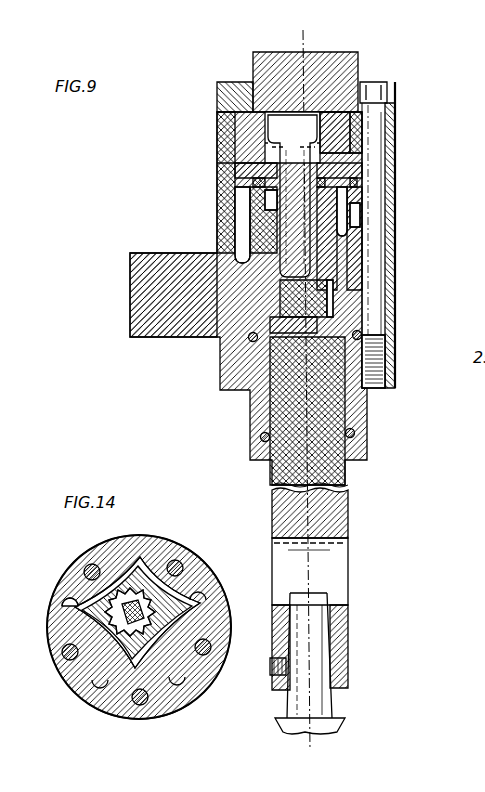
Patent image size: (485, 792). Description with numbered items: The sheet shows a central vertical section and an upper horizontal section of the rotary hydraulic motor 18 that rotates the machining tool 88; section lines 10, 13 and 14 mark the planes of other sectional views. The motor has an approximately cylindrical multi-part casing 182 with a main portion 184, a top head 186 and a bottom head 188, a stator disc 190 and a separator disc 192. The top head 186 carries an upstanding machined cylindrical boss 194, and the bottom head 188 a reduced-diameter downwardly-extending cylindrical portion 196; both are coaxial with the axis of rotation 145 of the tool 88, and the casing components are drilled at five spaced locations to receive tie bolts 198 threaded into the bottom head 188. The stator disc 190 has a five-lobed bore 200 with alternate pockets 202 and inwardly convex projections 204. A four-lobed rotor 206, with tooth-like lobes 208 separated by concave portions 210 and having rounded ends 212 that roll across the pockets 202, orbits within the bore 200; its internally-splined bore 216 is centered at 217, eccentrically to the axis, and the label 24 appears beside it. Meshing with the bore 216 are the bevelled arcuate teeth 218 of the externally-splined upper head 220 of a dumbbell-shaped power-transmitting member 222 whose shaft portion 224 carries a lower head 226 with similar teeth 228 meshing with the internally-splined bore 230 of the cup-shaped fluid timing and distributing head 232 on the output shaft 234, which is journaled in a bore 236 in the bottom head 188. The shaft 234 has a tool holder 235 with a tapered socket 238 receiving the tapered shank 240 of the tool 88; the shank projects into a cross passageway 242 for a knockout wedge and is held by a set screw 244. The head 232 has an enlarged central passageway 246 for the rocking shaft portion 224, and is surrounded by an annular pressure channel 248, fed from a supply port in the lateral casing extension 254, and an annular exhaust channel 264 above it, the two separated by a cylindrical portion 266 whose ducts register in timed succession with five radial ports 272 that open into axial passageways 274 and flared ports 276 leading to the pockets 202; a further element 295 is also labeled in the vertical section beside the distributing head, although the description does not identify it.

In FIG. 9, the section line 10— 10 is at (168, 295).
In FIG. 9, the section line 13— 13 is at (217, 230).
In FIG. 9, the section line 14— 14 is at (230, 125).
In FIG. 9, the rotary hydraulic motor 18 is at (252, 74).
In FIG. 14, the shaft 24 is at (165, 662).
In FIG. 9, the machining tool 88 is at (348, 722).
In FIG. 9, the axis of rotation 145 is at (305, 46).
In FIG. 9, the casing 182 is at (216, 189).
In FIG. 9, the main portion 184 is at (248, 207).
In FIG. 9, the top head 186 is at (219, 84).
In FIG. 9, the bottom head 188 is at (233, 391).
In FIG. 9, the stator disc 190 is at (396, 156).
In FIG. 14, the stator disc 190 is at (213, 570).
In FIG. 9, the separator disc 192 is at (388, 172).
In FIG. 9, the cylindrical boss 194 is at (358, 64).
In FIG. 9, the cylindrical portion 196 is at (369, 440).
In FIG. 9, the tie bolt 198 is at (390, 86).
In FIG. 14, the tie bolt 198 is at (177, 556).
In FIG. 9, the five-lobed bore 200 is at (244, 153).
In FIG. 14, the five-lobed bore 200 is at (66, 628).
In FIG. 14, the pockets 202 is at (62, 606).
In FIG. 14, the convex projections 204 is at (63, 650).
In FIG. 14, the four-lobed rotor 206 is at (96, 600).
In FIG. 14, the lobes 208 is at (136, 557).
In FIG. 14, the concave portions 210 is at (76, 573).
In FIG. 14, the rounded ends 212 is at (207, 603).
In FIG. 9, the internally-splined bore 216 is at (323, 112).
In FIG. 14, the internally-splined bore 216 is at (137, 619).
In FIG. 14, the center 217 is at (130, 612).
In FIG. 9, the splines or teeth 218 is at (243, 97).
In FIG. 9, the upper head 220 is at (308, 136).
In FIG. 9, the power-transmitting member 222 is at (291, 110).
In FIG. 9, the shaft portion 224 is at (292, 196).
In FIG. 9, the lower head 226 is at (301, 264).
In FIG. 9, the splines or teeth 228 is at (301, 306).
In FIG. 9, the internally-splined bore 230 is at (337, 320).
In FIG. 9, the fluid timing and distributing head 232 is at (368, 273).
In FIG. 9, the output shaft 234 is at (351, 503).
In FIG. 9, the tool holder 235 is at (350, 612).
In FIG. 9, the bore 236 is at (259, 427).
In FIG. 9, the tool holding socket 238 is at (343, 643).
In FIG. 9, the shank 240 is at (338, 699).
In FIG. 9, the cross passageway 242 is at (350, 548).
In FIG. 9, the set screw 244 is at (272, 670).
In FIG. 9, the central enlarged passageway 246 is at (326, 239).
In FIG. 9, the annular pressure channel 248 is at (244, 292).
In FIG. 9, the lateral extension 254 is at (144, 257).
In FIG. 9, the annular exhaust channel 264 is at (355, 212).
In FIG. 9, the cylindrical portion 266 is at (339, 262).
In FIG. 9, the radial ports 272 is at (247, 264).
In FIG. 9, the axial passageways 274 is at (248, 225).
In FIG. 9, the flared ports 276 is at (234, 172).
In FIG. 9, the seal ring 295 is at (358, 184).